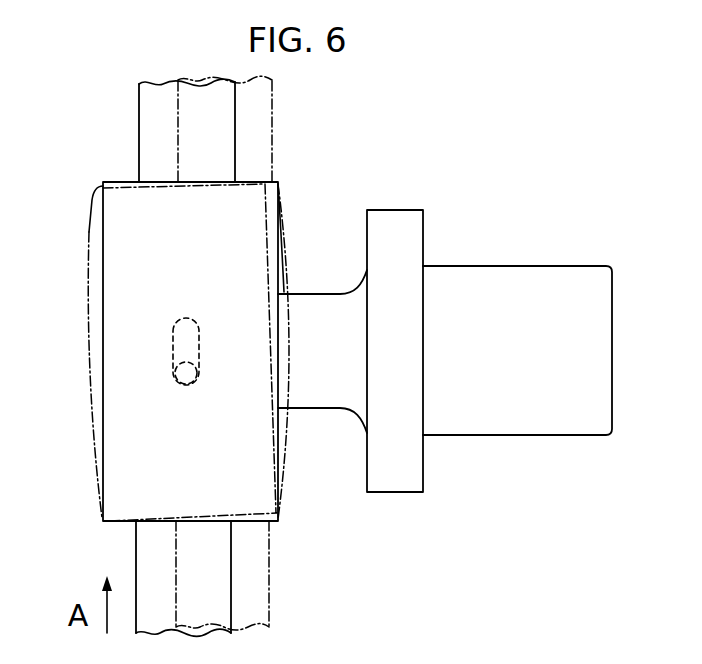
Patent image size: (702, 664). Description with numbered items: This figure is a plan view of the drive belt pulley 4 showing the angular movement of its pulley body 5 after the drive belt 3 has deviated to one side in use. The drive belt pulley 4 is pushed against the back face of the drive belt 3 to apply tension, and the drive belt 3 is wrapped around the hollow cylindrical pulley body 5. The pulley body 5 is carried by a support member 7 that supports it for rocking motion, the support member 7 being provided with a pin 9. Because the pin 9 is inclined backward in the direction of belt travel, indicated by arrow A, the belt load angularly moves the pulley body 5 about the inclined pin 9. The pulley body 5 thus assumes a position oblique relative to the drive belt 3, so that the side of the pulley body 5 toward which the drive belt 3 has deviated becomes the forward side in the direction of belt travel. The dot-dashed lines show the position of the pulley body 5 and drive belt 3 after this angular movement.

The drive belt 3 is at (139, 123).
The drive belt pulley 4 is at (370, 162).
The pulley body 5 is at (90, 231).
The support member 7 is at (482, 266).
The pin 9 is at (172, 350).